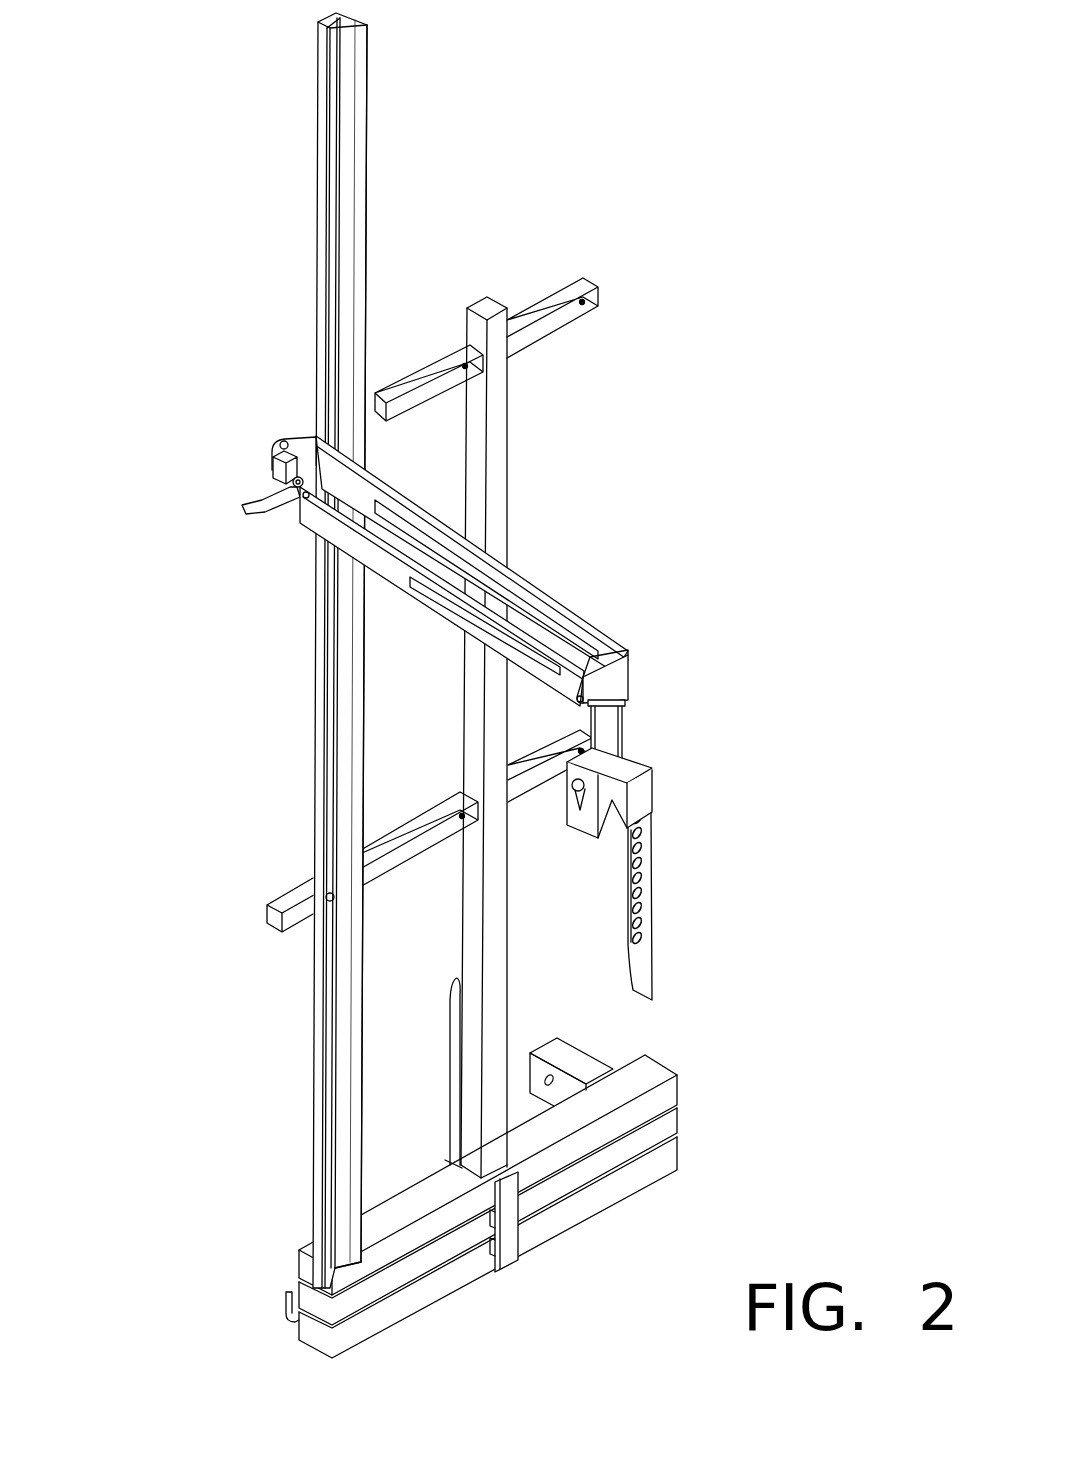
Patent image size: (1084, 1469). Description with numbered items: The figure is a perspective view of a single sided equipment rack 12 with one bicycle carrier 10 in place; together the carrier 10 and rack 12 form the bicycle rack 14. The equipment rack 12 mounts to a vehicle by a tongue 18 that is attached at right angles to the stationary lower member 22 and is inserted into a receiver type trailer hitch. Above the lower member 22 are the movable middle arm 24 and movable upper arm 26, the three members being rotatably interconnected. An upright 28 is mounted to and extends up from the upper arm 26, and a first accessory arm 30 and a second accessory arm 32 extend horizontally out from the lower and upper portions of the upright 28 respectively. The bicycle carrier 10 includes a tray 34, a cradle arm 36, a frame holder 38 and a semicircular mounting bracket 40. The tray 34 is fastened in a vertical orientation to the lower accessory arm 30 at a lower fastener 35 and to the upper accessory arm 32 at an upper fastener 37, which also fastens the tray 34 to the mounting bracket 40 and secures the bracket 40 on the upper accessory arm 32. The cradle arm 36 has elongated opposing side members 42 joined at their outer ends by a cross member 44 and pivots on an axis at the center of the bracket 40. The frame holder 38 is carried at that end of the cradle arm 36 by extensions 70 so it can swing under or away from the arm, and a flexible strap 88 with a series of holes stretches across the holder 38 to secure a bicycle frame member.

The bicycle carrier 10 is at (200, 590).
The equipment rack 12 is at (528, 1206).
The bicycle rack 14 is at (560, 228).
The tongue 18 is at (580, 1063).
The stationary lower member 22 is at (678, 1153).
The movable middle arm 24 is at (678, 1120).
The movable upper arm 26 is at (678, 1088).
The upright 28 is at (498, 440).
The first accessory arm 30 is at (421, 843).
The second accessory arm 32 is at (598, 291).
The tray 34 is at (360, 80).
The lower fastener 35 is at (332, 900).
The cradle arm 36 is at (492, 571).
The upper fastener 37 is at (330, 456).
The frame holder 38 is at (668, 790).
The mounting bracket 40 is at (306, 441).
The side members 42 is at (526, 584).
The cross member 44 is at (627, 662).
The extensions 70 is at (632, 720).
The strap 88 is at (653, 968).